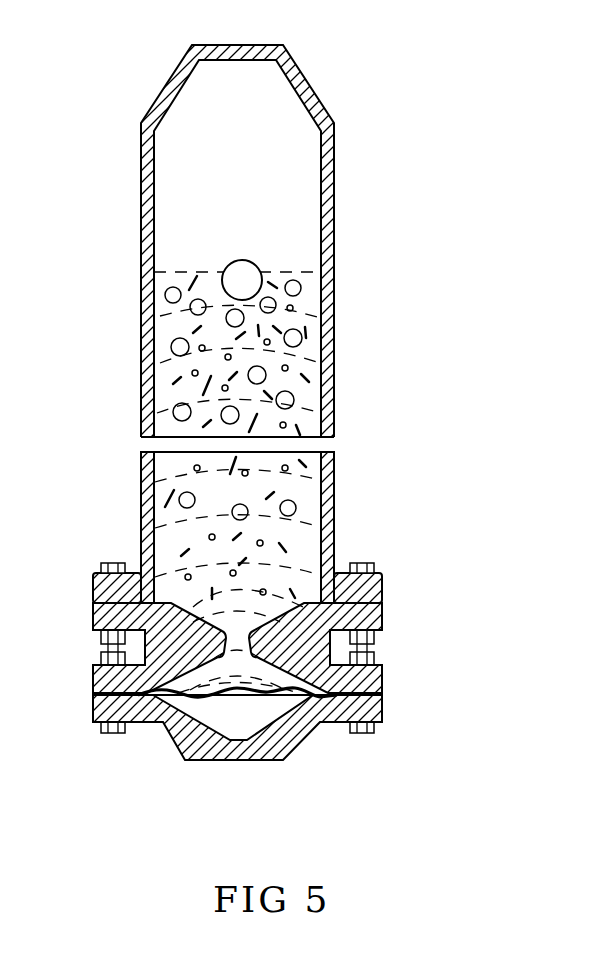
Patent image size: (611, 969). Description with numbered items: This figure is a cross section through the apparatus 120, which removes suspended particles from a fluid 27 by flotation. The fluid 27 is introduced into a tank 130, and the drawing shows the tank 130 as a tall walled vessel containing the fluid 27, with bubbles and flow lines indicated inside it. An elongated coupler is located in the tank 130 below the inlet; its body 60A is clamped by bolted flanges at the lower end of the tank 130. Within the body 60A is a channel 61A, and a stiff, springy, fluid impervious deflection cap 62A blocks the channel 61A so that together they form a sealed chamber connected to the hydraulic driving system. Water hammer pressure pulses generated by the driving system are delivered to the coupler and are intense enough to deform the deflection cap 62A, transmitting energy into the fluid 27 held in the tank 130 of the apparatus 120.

The apparatus 120 is at (392, 117).
The tank 130 is at (338, 312).
The fluid 27 is at (295, 493).
The nozzle assembly 60A is at (385, 675).
The lower nozzle body 61A is at (232, 725).
The nozzle orifice / slit 62A is at (253, 697).